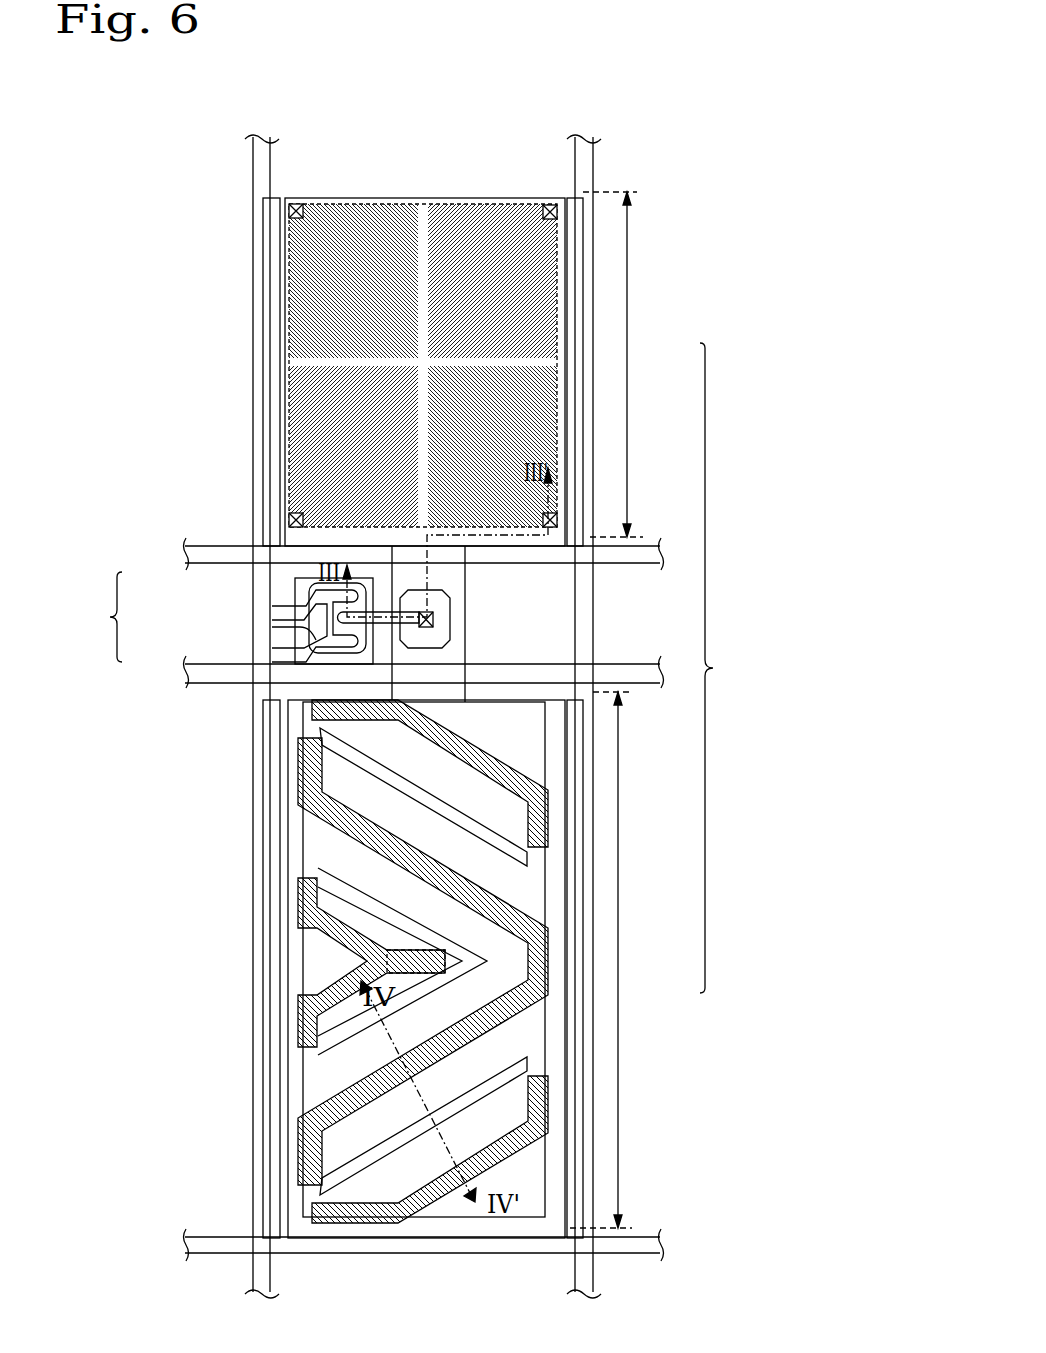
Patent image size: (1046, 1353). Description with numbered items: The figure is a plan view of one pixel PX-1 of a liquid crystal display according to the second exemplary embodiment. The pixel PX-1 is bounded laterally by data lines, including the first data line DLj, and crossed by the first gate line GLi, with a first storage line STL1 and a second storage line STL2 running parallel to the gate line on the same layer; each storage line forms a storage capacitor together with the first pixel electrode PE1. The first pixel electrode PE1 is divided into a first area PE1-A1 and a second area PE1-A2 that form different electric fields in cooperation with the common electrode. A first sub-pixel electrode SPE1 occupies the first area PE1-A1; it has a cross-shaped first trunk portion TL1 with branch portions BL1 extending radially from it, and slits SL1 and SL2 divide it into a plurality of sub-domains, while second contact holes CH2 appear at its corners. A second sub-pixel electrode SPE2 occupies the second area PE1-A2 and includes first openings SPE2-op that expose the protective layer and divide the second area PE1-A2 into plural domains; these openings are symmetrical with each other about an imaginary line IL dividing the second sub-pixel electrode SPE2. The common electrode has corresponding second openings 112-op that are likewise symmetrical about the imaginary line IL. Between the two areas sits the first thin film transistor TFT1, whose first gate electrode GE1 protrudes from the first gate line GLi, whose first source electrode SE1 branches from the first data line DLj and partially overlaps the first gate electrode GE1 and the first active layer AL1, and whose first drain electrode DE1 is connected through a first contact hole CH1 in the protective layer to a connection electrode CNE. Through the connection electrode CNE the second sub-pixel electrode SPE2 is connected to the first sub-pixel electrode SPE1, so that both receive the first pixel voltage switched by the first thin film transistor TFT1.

The first data line DLj is at (262, 137).
The pixel PX-1 is at (666, 95).
The first storage line STL1 is at (183, 552).
The first gate line GLi is at (183, 684).
The second storage line STL2 is at (663, 1245).
The first pixel electrode PE1 is at (505, 718).
The first sub-pixel electrode SPE1 is at (414, 198).
The second contact hole CH2 is at (296, 204).
The slit SL2 is at (288, 287).
The branch portion BL1 is at (300, 322).
The first trunk portion TL1 is at (293, 366).
The slit SL1 is at (288, 397).
The first area PE1-A1 is at (640, 364).
The second area PE1-A2 is at (631, 960).
The imaginary line IL is at (691, 964).
The first thin film transistor TFT1 is at (243, 618).
The first gate electrode GE1 is at (295, 598).
The first active layer AL1 is at (330, 642).
The first source electrode SE1 is at (310, 607).
The first drain electrode DE1 is at (337, 620).
The connection electrode CNE is at (450, 642).
The first contact hole CH1 is at (433, 619).
The second sub-pixel electrode SPE2 is at (300, 848).
The first opening SPE2-op is at (365, 770).
The second opening 112-op is at (300, 905).